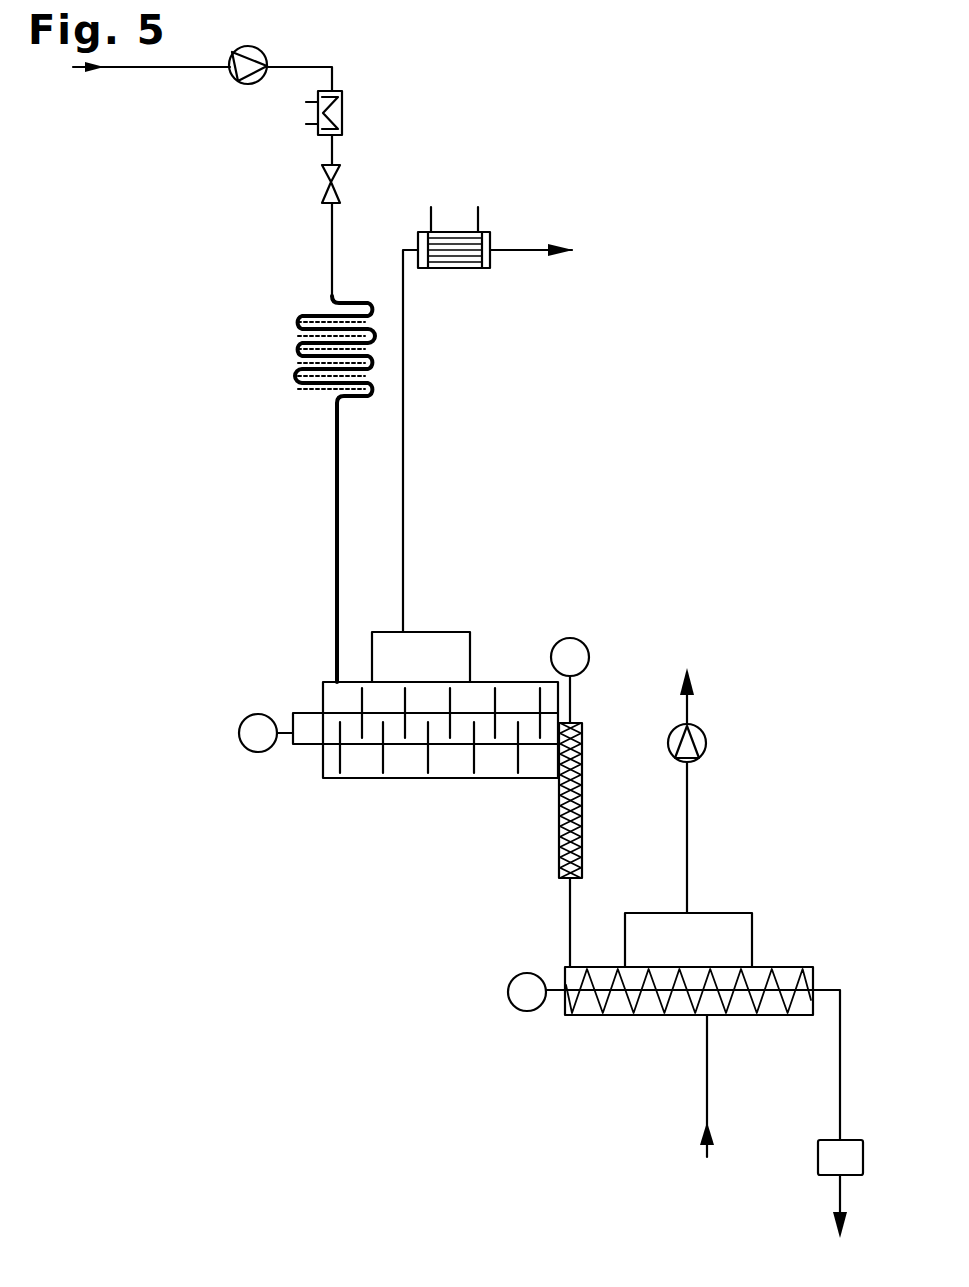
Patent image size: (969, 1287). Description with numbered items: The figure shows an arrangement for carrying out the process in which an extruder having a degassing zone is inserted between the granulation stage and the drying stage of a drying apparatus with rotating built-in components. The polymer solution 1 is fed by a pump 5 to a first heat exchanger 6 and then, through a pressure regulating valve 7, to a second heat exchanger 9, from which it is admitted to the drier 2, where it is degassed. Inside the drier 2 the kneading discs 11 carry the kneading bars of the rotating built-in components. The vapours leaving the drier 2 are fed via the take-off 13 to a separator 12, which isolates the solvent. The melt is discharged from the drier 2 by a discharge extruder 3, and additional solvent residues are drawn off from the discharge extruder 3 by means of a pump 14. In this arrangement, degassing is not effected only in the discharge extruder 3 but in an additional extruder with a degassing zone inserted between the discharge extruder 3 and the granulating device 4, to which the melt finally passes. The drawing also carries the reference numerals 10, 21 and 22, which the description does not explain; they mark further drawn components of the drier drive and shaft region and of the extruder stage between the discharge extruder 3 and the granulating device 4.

The polymer solution 1 is at (165, 69).
The pump 5 is at (255, 83).
The first heat exchanger 6 is at (343, 108).
The pressure regulating valve 7 is at (342, 179).
The second heat exchanger 9 is at (296, 350).
The separator 12 is at (448, 233).
The take-off 13 is at (428, 632).
The drier 2 is at (370, 779).
The stirrer shaft 21 is at (358, 750).
The kneading discs 11 is at (485, 761).
The stirrer motor 10 is at (240, 733).
The discharge extruder 3 is at (583, 858).
The pump 14 is at (706, 742).
The screw conveyor 22 is at (617, 1015).
The granulating device 4 is at (818, 1157).